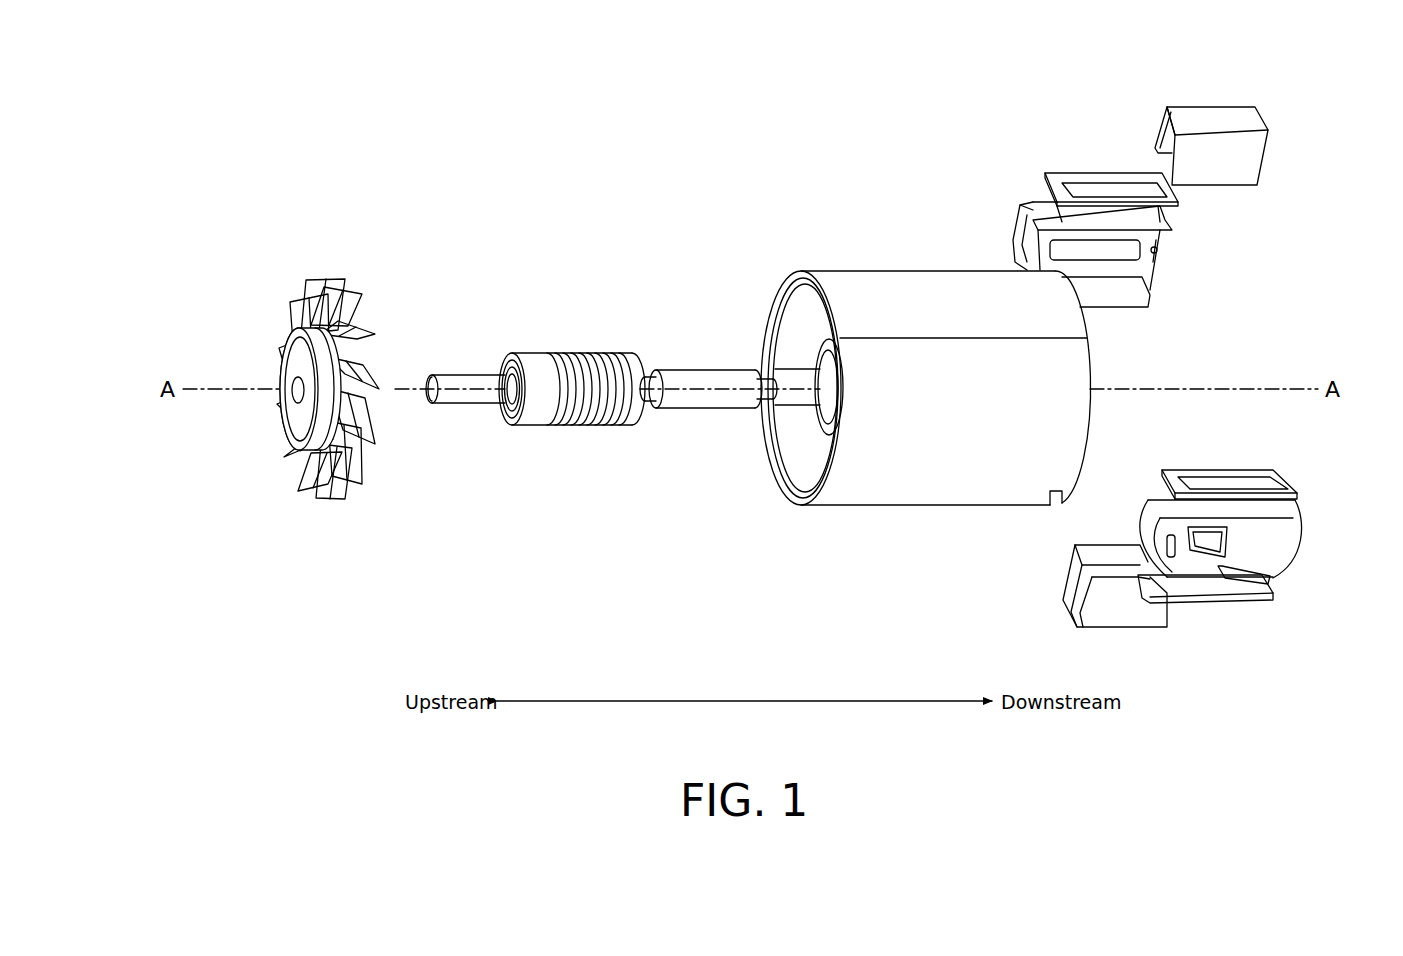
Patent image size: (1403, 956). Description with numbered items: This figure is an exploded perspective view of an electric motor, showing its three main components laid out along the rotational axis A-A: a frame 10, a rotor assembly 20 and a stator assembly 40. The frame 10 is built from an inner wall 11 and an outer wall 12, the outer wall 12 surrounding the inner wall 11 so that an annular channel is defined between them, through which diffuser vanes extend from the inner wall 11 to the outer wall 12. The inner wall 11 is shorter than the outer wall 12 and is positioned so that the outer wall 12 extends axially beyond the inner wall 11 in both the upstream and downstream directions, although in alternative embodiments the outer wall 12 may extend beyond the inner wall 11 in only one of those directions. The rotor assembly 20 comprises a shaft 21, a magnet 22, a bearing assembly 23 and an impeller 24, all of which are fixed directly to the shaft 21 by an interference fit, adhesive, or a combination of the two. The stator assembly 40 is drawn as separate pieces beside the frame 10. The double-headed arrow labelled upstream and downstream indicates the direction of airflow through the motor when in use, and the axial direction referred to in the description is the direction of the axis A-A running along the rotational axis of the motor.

The frame 10 is at (862, 168).
The inner wall 11 is at (818, 406).
The outer wall 12 is at (888, 480).
The rotor assembly 20 is at (438, 294).
The shaft 21 is at (477, 392).
The magnet 22 is at (711, 383).
The bearing assembly 23 is at (577, 311).
The impeller 24 is at (290, 406).
The stator assembly 40 is at (1077, 116).